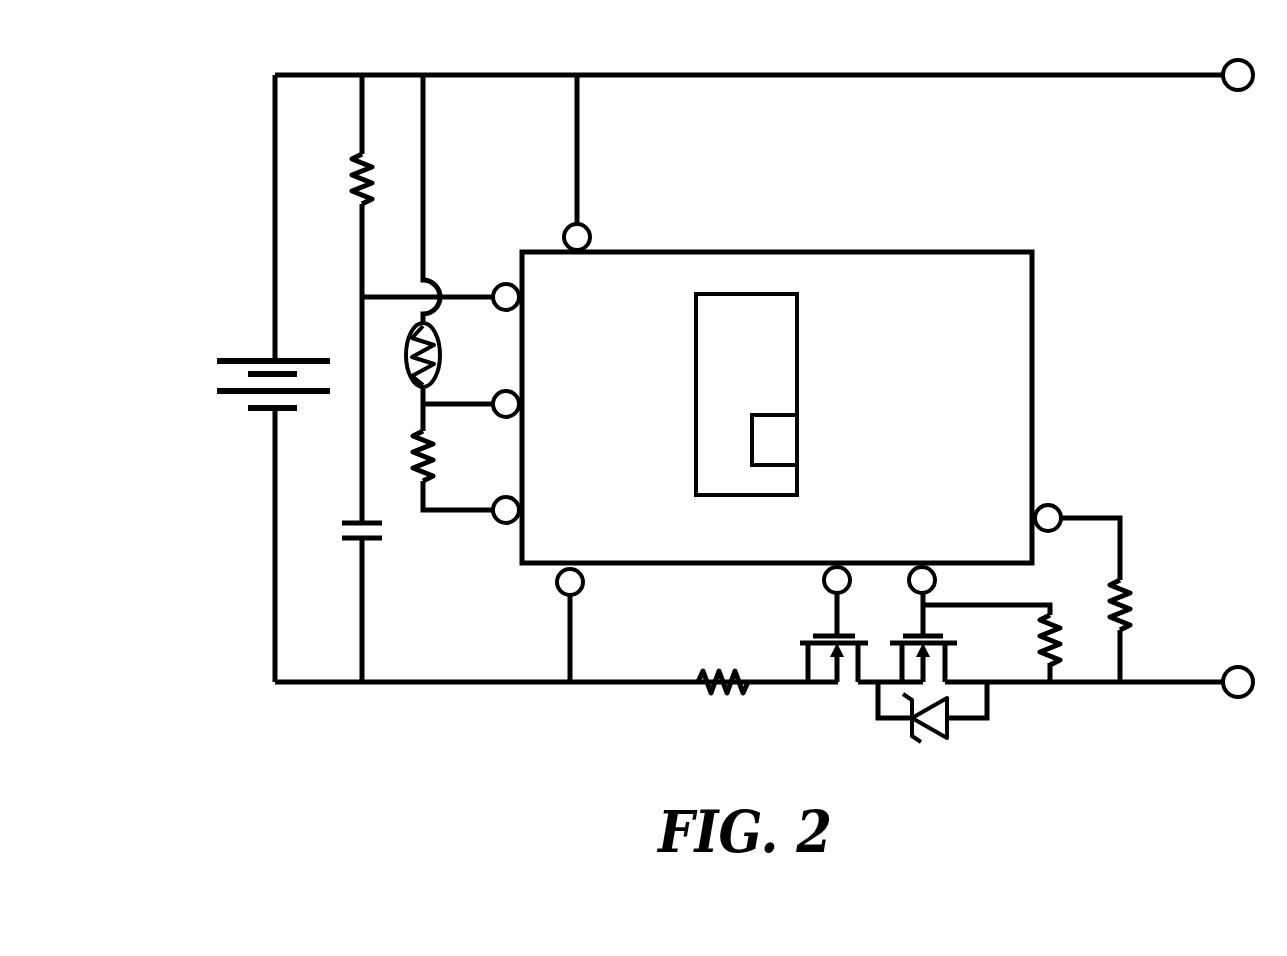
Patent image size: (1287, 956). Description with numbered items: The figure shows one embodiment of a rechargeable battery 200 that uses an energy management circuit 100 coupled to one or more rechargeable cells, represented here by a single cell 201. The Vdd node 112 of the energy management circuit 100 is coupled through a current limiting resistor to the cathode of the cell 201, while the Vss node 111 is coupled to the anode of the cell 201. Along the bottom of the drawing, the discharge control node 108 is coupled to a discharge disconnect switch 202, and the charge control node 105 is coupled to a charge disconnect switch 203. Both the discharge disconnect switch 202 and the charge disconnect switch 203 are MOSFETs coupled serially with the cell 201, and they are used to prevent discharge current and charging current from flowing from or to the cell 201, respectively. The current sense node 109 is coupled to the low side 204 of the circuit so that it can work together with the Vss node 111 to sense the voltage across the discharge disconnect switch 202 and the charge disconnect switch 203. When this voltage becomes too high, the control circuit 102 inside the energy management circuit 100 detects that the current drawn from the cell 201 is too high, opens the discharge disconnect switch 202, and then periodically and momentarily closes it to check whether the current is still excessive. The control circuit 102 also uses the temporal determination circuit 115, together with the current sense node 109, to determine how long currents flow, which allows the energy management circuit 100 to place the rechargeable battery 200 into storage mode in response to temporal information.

The rechargeable battery 200 is at (1110, 266).
The cell 201 is at (217, 361).
The energy management circuit 100 is at (1034, 385).
The control circuit 102 is at (800, 352).
The temporal determination circuit 115 is at (775, 440).
The Vdd node 112 is at (507, 282).
The Vss node 111 is at (557, 588).
The discharge control node 108 is at (838, 575).
The charge control node 105 is at (923, 575).
The current sense node 109 is at (1047, 518).
The discharge disconnect switch 202 is at (800, 645).
The charge disconnect switch 203 is at (957, 643).
The low side 204 is at (728, 672).